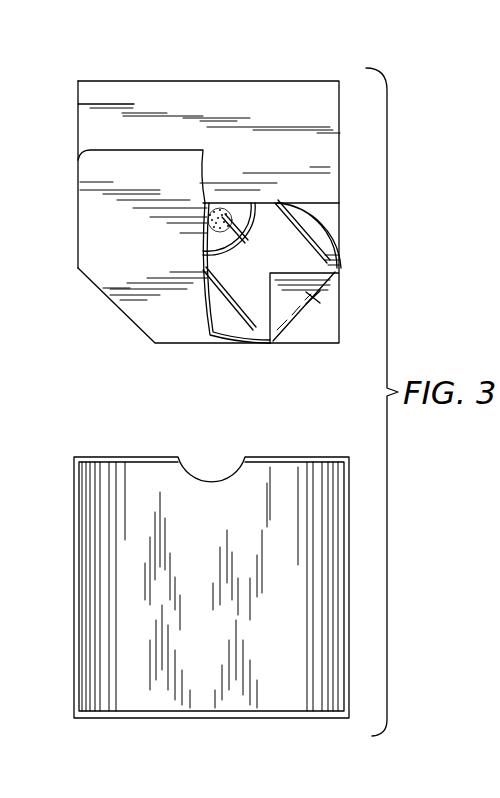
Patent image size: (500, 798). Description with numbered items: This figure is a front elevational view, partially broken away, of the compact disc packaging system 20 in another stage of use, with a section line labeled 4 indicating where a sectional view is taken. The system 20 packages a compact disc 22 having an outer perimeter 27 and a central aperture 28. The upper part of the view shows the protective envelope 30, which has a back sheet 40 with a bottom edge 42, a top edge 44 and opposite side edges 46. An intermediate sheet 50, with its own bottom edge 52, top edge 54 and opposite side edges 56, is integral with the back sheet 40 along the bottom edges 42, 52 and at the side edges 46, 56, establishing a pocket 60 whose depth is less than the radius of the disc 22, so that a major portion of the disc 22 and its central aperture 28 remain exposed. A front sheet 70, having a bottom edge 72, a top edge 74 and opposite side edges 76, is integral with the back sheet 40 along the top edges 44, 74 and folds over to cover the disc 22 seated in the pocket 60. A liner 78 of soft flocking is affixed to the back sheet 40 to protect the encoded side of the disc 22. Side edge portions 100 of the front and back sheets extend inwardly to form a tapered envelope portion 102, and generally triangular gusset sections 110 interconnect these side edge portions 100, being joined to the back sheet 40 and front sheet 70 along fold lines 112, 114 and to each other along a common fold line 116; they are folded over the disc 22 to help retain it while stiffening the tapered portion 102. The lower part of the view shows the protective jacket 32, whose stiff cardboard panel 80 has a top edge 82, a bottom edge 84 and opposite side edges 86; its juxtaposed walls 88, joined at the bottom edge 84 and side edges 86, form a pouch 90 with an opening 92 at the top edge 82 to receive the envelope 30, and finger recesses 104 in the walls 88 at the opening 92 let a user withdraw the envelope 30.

The section line 4- 4 is at (203, 72).
The compact disc packaging system 20 is at (290, 400).
The compact disc 22 is at (343, 212).
The outer perimeter 27 is at (339, 274).
The central aperture 28 is at (232, 205).
The protective envelope 30 is at (342, 80).
The protective jacket 32 is at (75, 529).
The back sheet 40 is at (330, 248).
The bottom edge 42 is at (233, 81).
The top edge 44 is at (240, 343).
The opposite side edges 46 is at (78, 144).
The intermediate sheet 50 is at (160, 93).
The bottom edge 52 is at (272, 80).
The top edge 54 is at (266, 265).
The opposite side edges 56 is at (78, 130).
The pocket 60 is at (344, 137).
The front sheet 70 is at (88, 240).
The bottom edge 72 is at (122, 150).
The top edge 74 is at (177, 343).
The opposite side edges 76 is at (80, 223).
The liner 78 is at (218, 207).
The panel 80 is at (76, 703).
The top edge 82 is at (252, 457).
The bottom edge 84 is at (112, 720).
The opposite side edges 86 is at (76, 580).
The walls 88 is at (104, 652).
The pouch 90 is at (307, 509).
The opening 92 is at (136, 457).
The side edge portion 100 is at (100, 290).
The envelope portion 102 is at (148, 320).
The finger recesses 104 is at (242, 462).
The gusset sections 110 is at (316, 298).
The fold line 112 is at (312, 368).
The fold line 114 is at (296, 325).
The common fold line 116 is at (262, 298).